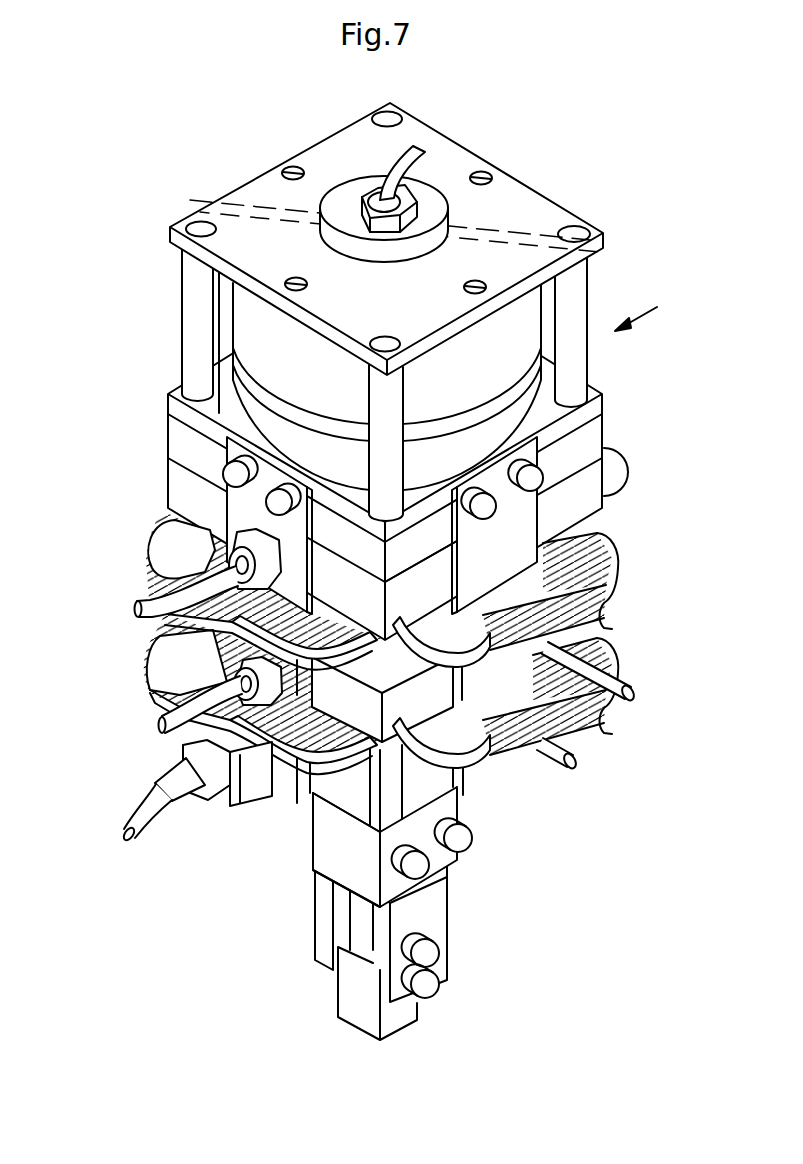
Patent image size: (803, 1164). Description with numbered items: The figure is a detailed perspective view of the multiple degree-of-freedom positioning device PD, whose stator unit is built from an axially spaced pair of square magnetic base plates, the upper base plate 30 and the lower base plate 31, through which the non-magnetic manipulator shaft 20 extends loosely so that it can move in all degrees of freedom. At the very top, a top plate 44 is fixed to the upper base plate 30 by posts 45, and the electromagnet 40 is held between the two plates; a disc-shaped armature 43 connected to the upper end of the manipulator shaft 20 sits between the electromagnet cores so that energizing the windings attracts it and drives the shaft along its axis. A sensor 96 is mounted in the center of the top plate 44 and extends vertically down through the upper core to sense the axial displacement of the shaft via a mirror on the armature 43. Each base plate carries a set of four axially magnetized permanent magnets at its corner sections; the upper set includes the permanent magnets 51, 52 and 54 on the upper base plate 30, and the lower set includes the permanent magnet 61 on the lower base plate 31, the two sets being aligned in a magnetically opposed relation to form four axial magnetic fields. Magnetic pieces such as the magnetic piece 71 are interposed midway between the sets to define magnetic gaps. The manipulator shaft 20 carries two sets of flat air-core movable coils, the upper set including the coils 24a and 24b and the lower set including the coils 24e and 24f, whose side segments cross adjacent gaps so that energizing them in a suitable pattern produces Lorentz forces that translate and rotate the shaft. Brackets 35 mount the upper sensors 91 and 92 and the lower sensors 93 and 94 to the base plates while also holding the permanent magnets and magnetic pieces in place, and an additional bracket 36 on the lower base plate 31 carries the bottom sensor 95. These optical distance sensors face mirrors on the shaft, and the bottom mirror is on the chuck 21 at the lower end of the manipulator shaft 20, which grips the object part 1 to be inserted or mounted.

The object part 1 is at (350, 1008).
The manipulator shaft 20 is at (343, 867).
The chuck 21 is at (435, 925).
The movable coil 24a is at (167, 547).
The movable coil 24b is at (590, 572).
The movable coil 24e is at (153, 660).
The movable coil 24f is at (560, 705).
The upper base plate 30 is at (583, 443).
The lower base plate 31 is at (337, 810).
The bracket 35 is at (233, 510).
The additional bracket 36 is at (248, 790).
The electromagnet 40 is at (523, 327).
The armature 43 is at (253, 383).
The top plate 44 is at (514, 203).
The post 45 is at (197, 300).
The permanent magnet 51 is at (423, 610).
The permanent magnet 52 is at (573, 497).
The permanent magnet 54 is at (173, 483).
The permanent magnet 61 is at (410, 785).
The magnetic piece 71 is at (342, 770).
The sensor 91 is at (155, 582).
The sensor 92 is at (597, 670).
The sensor 93 is at (150, 692).
The sensor 94 is at (567, 752).
The bottom sensor 95 is at (183, 793).
The sensor 96 is at (418, 190).
The positioning device PD is at (662, 307).